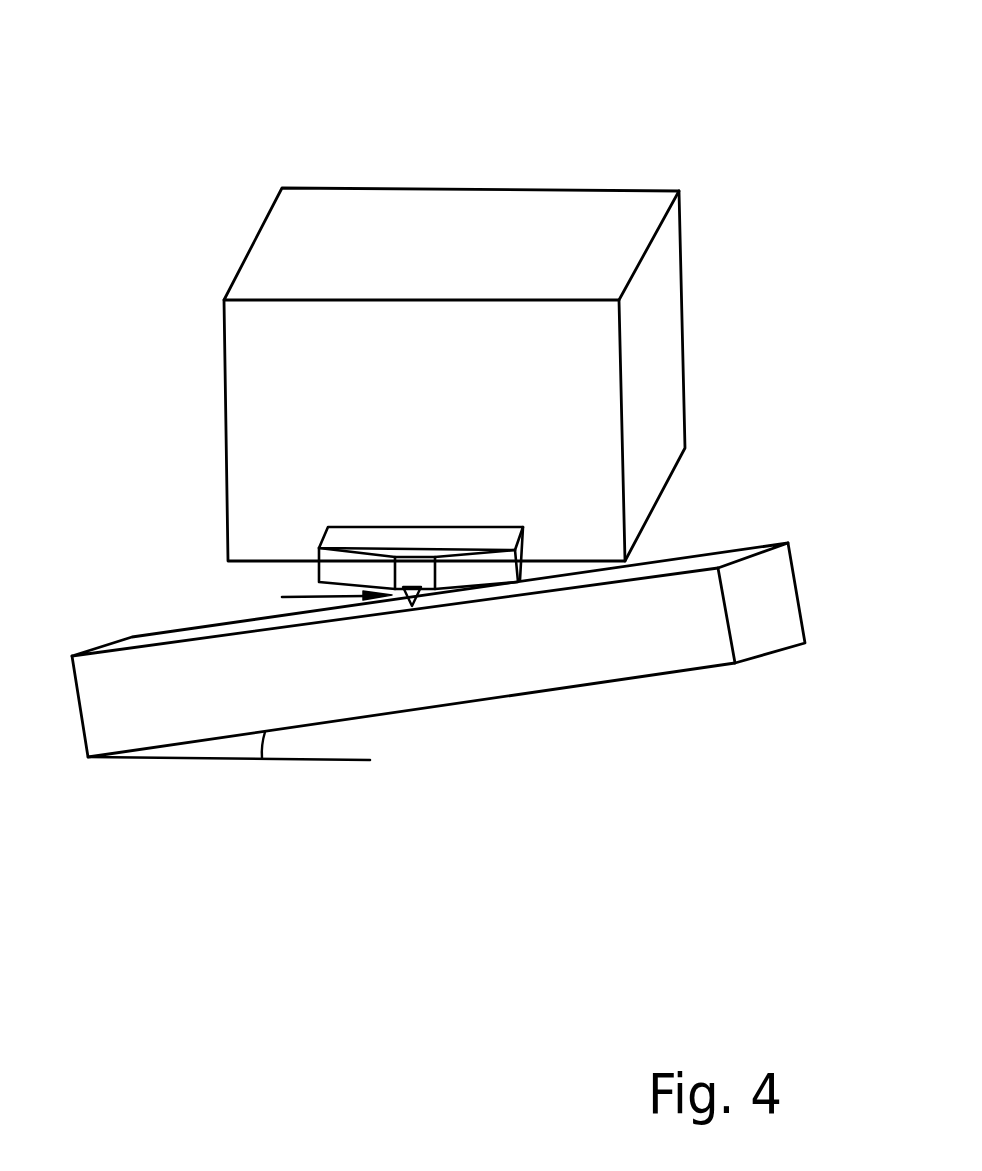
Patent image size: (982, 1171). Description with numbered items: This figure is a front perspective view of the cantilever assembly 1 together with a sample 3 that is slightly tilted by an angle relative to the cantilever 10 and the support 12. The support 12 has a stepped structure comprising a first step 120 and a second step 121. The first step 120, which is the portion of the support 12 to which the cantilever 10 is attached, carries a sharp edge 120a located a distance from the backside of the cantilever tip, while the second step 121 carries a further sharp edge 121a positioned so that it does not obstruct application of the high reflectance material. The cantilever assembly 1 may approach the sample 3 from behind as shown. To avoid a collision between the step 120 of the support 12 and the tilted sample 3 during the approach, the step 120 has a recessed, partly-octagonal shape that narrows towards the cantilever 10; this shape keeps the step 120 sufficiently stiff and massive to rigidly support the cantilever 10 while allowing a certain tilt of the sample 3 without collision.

The cantilever assembly 1 is at (762, 128).
The sample 3 is at (510, 637).
The cantilever 10 is at (320, 598).
The support 12 is at (534, 497).
The first step 120 is at (437, 541).
The sharp edge 120a is at (394, 557).
The second step 121 is at (427, 268).
The further sharp edge 121a is at (505, 300).